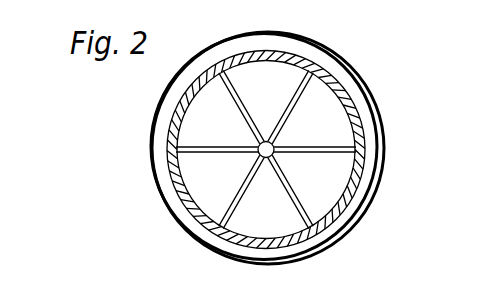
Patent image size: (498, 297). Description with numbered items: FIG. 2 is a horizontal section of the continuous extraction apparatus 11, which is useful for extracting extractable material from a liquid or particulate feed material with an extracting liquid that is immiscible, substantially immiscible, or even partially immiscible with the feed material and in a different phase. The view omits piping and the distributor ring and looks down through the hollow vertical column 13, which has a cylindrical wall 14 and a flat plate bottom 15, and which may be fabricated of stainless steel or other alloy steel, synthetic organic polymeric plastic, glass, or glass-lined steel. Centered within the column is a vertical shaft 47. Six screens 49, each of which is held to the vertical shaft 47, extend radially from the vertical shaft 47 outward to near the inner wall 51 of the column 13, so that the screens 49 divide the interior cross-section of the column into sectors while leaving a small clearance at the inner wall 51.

The continuous extraction apparatus 11 is at (263, 148).
The hollow vertical column 13 is at (355, 212).
The cylindrical wall 14 is at (359, 118).
The flat plate bottom 15 is at (364, 87).
The vertical shaft 47 is at (260, 144).
The screens 49 is at (240, 190).
The inner wall 51 is at (347, 181).